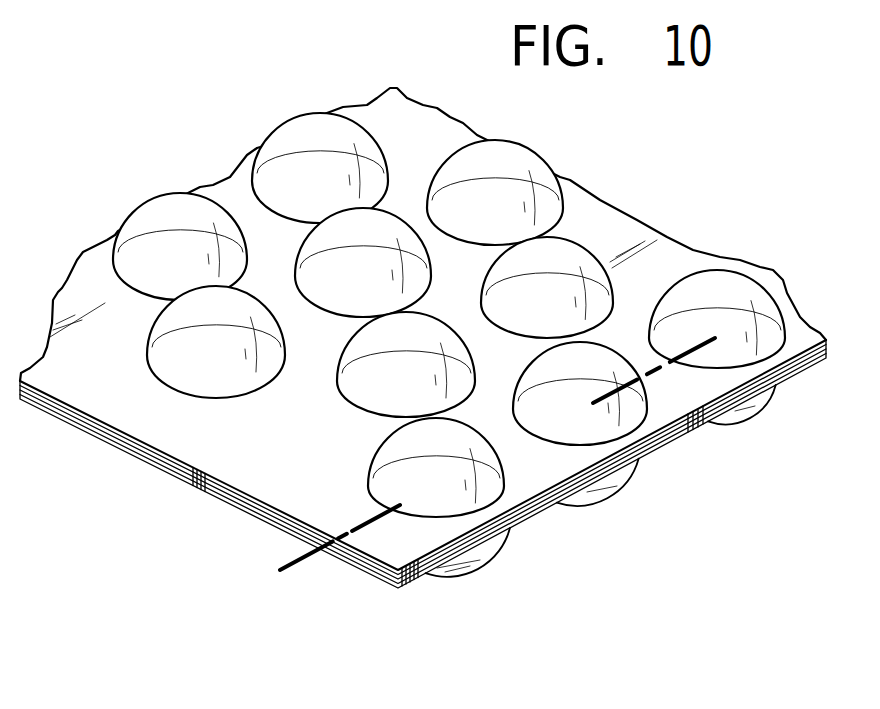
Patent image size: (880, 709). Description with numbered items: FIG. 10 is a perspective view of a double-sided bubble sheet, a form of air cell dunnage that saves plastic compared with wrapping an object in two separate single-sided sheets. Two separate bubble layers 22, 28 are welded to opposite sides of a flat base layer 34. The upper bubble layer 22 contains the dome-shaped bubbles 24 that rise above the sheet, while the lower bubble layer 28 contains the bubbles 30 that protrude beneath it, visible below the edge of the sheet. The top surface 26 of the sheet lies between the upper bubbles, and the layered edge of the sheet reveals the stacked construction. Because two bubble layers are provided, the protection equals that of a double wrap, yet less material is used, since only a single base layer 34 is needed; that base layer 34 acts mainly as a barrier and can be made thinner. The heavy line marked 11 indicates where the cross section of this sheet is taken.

The section line 11- 11 is at (267, 541).
The bubble layer 22 is at (100, 432).
The bubbles 24 is at (278, 150).
The top surface of sheet 26 is at (552, 475).
The bubble layer 28 is at (245, 507).
The bubbles 30 is at (488, 552).
The base layer 34 is at (175, 468).